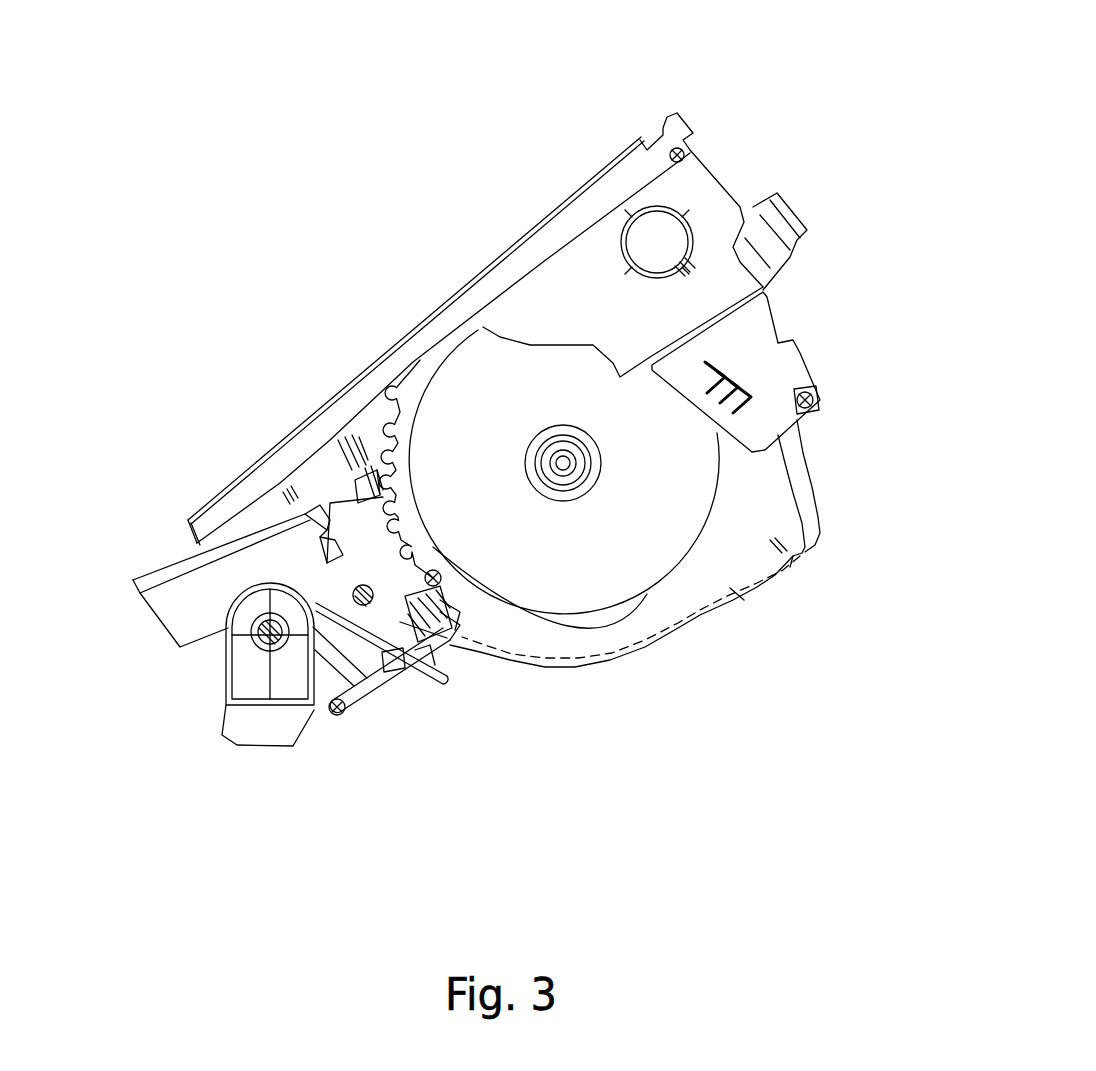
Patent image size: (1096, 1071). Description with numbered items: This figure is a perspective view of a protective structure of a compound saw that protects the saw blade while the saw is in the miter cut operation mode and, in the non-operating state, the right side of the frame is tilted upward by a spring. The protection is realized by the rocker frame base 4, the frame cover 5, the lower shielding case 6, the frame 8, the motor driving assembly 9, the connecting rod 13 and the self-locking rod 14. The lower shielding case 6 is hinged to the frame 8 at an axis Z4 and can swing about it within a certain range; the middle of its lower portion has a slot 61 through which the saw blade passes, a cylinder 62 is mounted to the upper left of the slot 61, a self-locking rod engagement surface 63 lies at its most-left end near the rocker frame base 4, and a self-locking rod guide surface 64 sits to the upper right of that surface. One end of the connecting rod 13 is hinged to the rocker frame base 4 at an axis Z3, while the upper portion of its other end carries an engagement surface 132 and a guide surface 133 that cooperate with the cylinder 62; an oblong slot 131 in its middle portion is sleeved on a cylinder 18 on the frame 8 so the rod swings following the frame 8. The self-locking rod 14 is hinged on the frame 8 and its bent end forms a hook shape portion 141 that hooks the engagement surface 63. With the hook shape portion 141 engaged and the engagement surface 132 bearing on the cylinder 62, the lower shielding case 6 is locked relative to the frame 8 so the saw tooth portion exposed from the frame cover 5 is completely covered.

The rocker frame base 4 is at (194, 697).
The frame cover 5 is at (692, 270).
The lower shielding case 6 is at (770, 540).
The frame 8 is at (295, 508).
The motor driving assembly 9 is at (572, 458).
The connecting rod 13 is at (481, 722).
The self-locking rod 14 is at (352, 492).
The cylinder 18 is at (450, 628).
The slot 61 is at (737, 595).
The cylinder 62 is at (438, 582).
The self-locking rod engagement surface 63 is at (325, 555).
The self-locking rod guide surface 64 is at (359, 492).
The oblong slot 131 is at (400, 660).
The engagement surface 132 is at (455, 620).
The guide surface 133 is at (422, 660).
The hook shape portion 141 is at (320, 538).
The axis Z3 is at (338, 715).
The axis Z4 is at (259, 645).